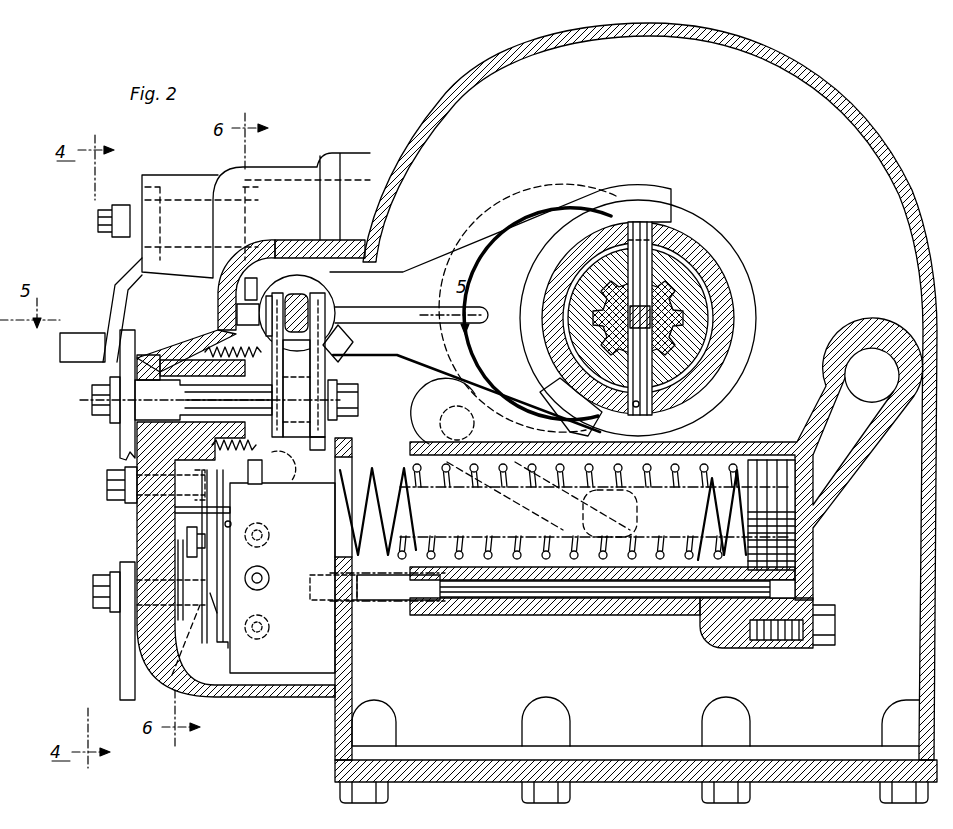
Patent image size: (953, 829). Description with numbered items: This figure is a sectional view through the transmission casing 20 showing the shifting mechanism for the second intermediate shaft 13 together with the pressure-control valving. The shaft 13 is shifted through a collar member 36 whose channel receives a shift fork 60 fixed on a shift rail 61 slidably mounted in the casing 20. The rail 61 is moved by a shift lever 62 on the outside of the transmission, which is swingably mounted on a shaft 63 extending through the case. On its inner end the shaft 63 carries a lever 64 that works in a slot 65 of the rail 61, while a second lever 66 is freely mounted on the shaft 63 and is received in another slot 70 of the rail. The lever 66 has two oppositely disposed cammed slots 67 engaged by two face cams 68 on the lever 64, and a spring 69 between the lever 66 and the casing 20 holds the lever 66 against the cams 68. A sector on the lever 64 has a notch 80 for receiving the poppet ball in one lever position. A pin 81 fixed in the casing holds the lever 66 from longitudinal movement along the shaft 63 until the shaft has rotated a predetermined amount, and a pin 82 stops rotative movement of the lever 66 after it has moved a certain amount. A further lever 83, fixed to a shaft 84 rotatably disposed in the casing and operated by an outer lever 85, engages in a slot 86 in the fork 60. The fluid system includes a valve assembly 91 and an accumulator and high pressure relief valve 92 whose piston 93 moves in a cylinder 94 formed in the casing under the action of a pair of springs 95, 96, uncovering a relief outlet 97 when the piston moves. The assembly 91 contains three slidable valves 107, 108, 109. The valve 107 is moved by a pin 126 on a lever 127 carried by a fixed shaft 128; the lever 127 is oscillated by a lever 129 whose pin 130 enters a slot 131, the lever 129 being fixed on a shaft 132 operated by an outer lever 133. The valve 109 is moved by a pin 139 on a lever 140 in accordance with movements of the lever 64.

The second intermediate shaft 13 is at (672, 300).
The transmission casing 20 is at (848, 117).
The collar member 36 is at (712, 232).
The shift fork 60 is at (603, 187).
The shift rail 61 is at (345, 307).
The shift lever 62 is at (115, 440).
The shaft 63 is at (118, 380).
The lever 64 is at (310, 300).
The slot 65 is at (346, 343).
The lever 66 is at (281, 262).
The cammed slots 67 is at (335, 390).
The face cams 68 is at (340, 403).
The spring 69 is at (228, 350).
The slot 70 is at (276, 323).
The notch 80 is at (327, 440).
The pin 81 is at (256, 482).
The pin 82 is at (290, 478).
The lever 83 is at (245, 289).
The shaft 84 is at (98, 222).
The lever 85 is at (104, 300).
The slot 86 is at (237, 313).
The valve assembly 91 is at (268, 675).
The accumulator and high pressure relief valve 92 is at (637, 625).
The piston 93 is at (783, 483).
The cylinder 94 is at (538, 615).
The spring 95 is at (740, 460).
The spring 96 is at (718, 476).
The relief outlet 97 is at (615, 503).
The valve 107 is at (270, 627).
The valve 108 is at (267, 585).
The valve 109 is at (270, 535).
The pin 126 is at (218, 640).
The lever 127 is at (212, 612).
The shaft 128 is at (107, 490).
The lever 129 is at (178, 553).
The pin 130 is at (187, 540).
The slot 131 is at (170, 648).
The shaft 132 is at (93, 592).
The lever 133 is at (124, 657).
The pin 139 is at (232, 523).
The lever 140 is at (185, 513).